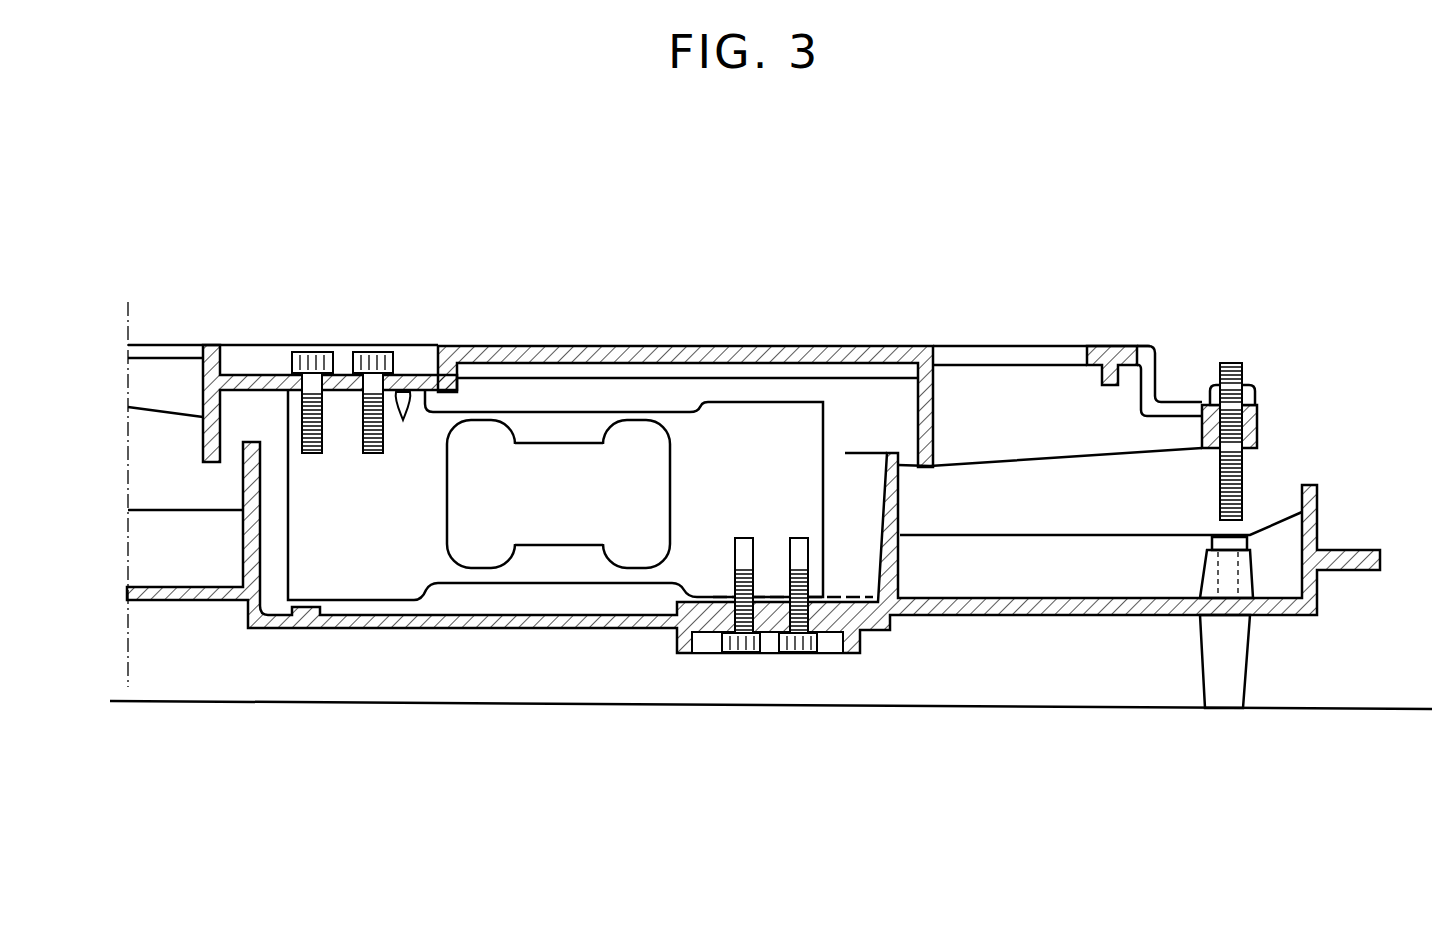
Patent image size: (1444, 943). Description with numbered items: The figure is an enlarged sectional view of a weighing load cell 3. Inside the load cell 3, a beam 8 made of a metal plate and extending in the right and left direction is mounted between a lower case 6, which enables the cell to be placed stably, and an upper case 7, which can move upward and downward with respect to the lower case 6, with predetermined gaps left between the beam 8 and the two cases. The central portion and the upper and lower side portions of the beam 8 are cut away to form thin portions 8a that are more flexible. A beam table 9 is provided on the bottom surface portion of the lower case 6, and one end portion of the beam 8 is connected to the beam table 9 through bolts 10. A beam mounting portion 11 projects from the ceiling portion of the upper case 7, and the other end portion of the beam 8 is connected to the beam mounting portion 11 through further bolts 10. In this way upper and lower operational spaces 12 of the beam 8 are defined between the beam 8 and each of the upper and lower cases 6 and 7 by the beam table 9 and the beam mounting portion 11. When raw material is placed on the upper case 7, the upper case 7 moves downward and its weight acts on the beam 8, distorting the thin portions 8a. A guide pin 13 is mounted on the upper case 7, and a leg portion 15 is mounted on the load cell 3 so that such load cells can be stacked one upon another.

The load cell 3 is at (1055, 328).
The lower case 6 is at (1090, 617).
The upper case 7 is at (710, 347).
The beam 8 is at (572, 510).
The thin portions 8a is at (587, 430).
The beam table 9 is at (713, 597).
The bolts 10 is at (313, 347).
The beam mounting portion 11 is at (404, 392).
The operational spaces 12 is at (590, 397).
The guide pin 13 is at (1236, 362).
The leg portion 15 is at (1232, 672).